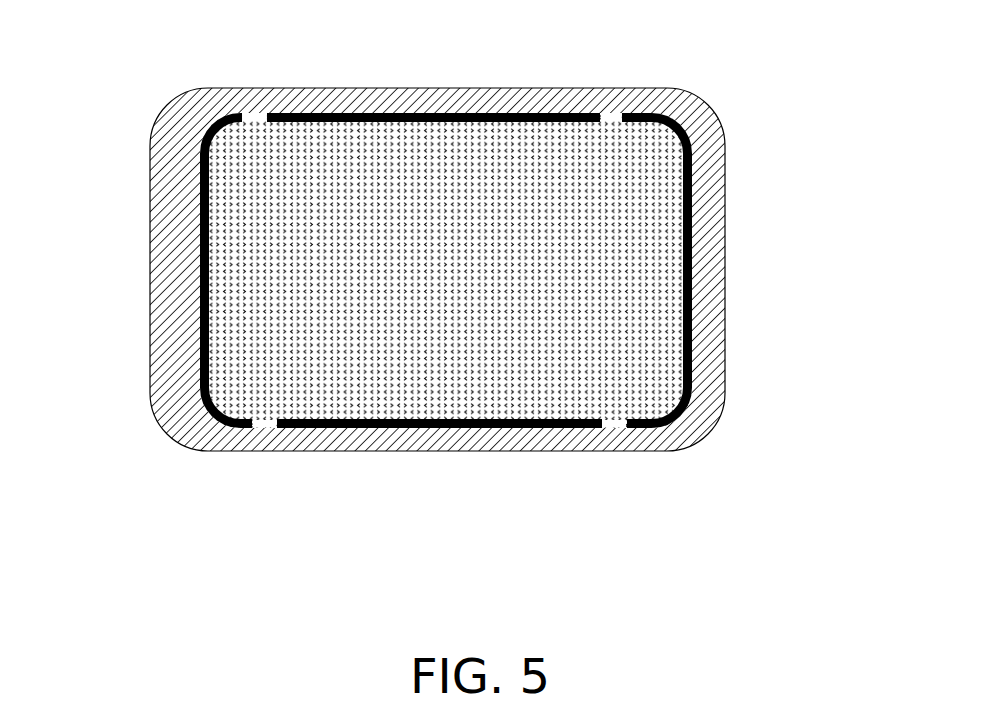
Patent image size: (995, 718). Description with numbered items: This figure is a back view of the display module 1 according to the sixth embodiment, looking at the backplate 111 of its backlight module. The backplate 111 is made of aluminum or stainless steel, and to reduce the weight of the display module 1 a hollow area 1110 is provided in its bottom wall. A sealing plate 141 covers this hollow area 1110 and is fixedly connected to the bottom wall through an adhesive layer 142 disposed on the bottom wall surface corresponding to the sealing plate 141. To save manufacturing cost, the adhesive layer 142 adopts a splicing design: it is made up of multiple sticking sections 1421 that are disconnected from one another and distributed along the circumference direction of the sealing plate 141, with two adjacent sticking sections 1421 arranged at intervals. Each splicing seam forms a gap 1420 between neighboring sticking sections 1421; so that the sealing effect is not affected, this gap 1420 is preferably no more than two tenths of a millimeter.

The display module 1 is at (455, 319).
The backplate 111 is at (157, 152).
The hollow area 1110 is at (521, 317).
The sealing plate 141 is at (622, 303).
The adhesive layer 142 is at (455, 272).
The sticking section 1421 is at (428, 111).
The gap 1420 is at (258, 105).